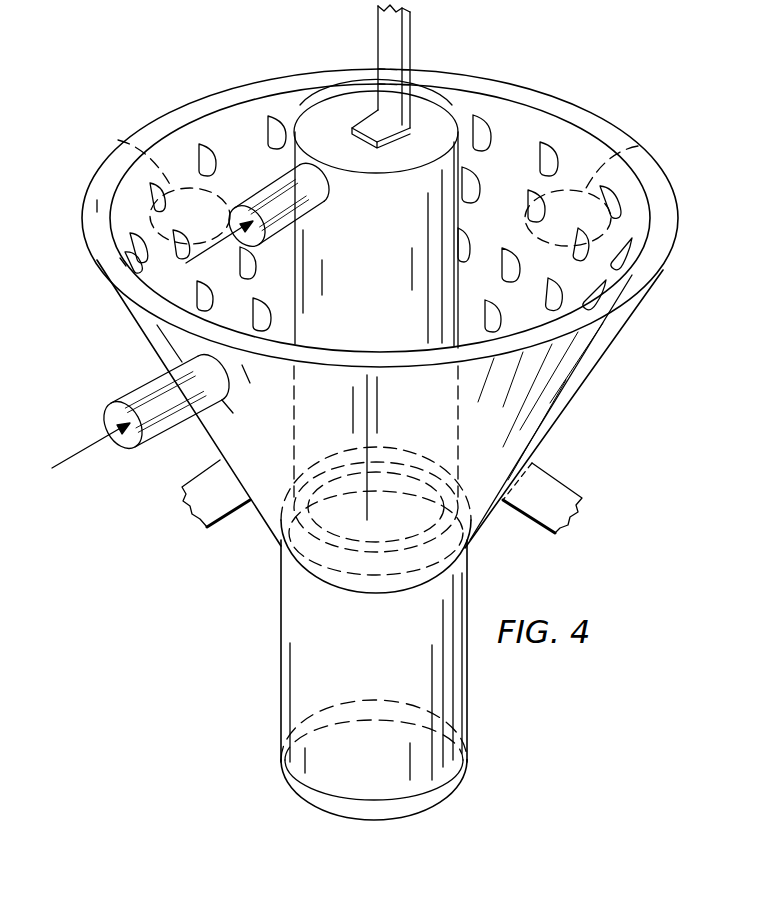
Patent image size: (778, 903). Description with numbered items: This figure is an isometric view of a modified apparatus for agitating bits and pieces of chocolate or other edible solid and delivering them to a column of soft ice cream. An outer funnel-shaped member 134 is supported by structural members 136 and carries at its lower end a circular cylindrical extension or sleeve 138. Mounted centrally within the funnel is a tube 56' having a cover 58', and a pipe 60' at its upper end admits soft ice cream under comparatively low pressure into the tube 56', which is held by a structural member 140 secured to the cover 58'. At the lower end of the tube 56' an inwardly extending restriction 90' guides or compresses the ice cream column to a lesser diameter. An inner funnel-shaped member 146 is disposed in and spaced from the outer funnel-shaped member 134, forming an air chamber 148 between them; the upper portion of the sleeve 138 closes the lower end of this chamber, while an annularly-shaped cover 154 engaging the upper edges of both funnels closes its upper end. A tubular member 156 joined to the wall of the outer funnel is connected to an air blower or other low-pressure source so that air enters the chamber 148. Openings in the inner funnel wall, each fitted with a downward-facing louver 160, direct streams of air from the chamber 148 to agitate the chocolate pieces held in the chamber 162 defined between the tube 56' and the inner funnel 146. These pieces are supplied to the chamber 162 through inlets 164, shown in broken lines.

The tube 56' is at (414, 286).
The cover 58' is at (376, 70).
The pipe 60' is at (281, 238).
The inwardly extending restriction 90' is at (349, 525).
The funnel-shaped member 134 is at (608, 348).
The structural members 136 is at (218, 463).
The circular cylindrical extension or sleeve 138 is at (282, 660).
The structural member 140 is at (380, 32).
The inner funnel-shaped member 146 is at (123, 262).
The air chamber 148 is at (96, 210).
The annularly-shaped cover 154 is at (157, 128).
The tubular member 156 is at (106, 418).
The louver 160 is at (272, 128).
The chamber 162 is at (258, 181).
The inlets 164 is at (115, 141).